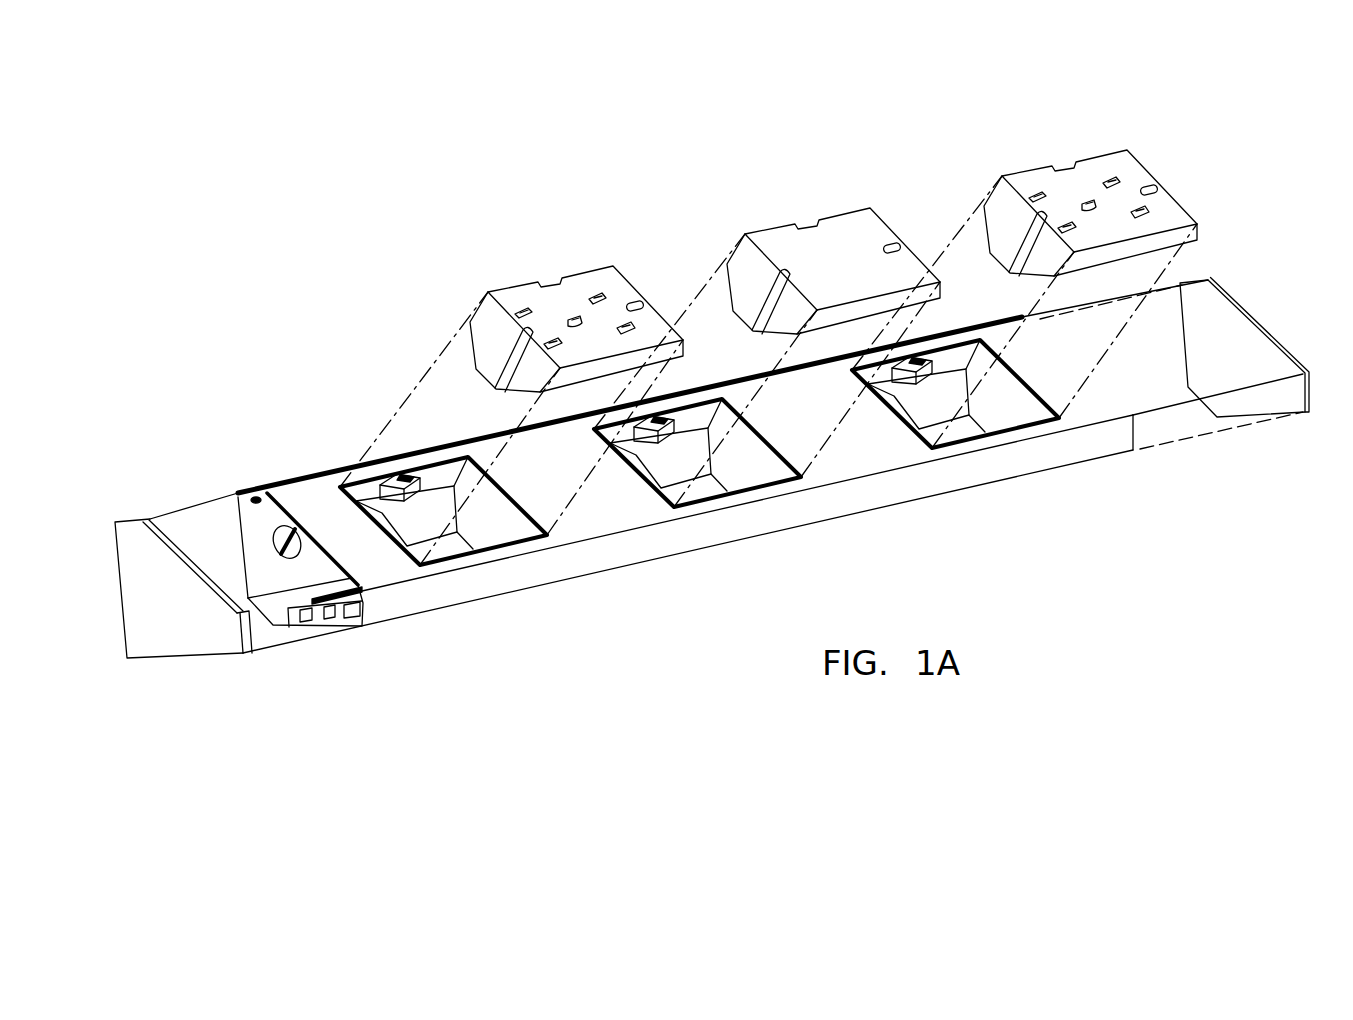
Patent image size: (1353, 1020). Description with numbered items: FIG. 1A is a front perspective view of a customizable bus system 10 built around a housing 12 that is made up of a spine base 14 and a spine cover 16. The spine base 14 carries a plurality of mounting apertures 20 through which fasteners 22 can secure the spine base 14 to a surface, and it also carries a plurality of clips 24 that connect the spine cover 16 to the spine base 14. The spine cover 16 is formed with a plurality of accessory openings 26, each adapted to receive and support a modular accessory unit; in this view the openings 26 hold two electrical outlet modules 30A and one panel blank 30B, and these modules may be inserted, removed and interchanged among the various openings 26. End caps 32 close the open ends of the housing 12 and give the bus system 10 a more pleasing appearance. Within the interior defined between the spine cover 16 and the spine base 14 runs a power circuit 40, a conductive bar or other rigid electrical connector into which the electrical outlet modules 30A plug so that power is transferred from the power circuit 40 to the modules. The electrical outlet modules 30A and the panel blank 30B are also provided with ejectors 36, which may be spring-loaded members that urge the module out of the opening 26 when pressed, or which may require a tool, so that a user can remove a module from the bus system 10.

The customizable bus system 10 is at (664, 220).
The housing 12 is at (270, 459).
The spine base 14 is at (308, 629).
The spine cover 16 is at (327, 512).
The mounting apertures 20 is at (272, 564).
The fasteners 22 is at (303, 546).
The clips 24 is at (254, 496).
The accessory openings 26 is at (512, 506).
The electrical outlet modules 30A is at (590, 280).
The panel blank 30B is at (853, 228).
The end caps 32 is at (187, 642).
The ejectors 36 is at (498, 374).
The power circuit 40 is at (343, 619).